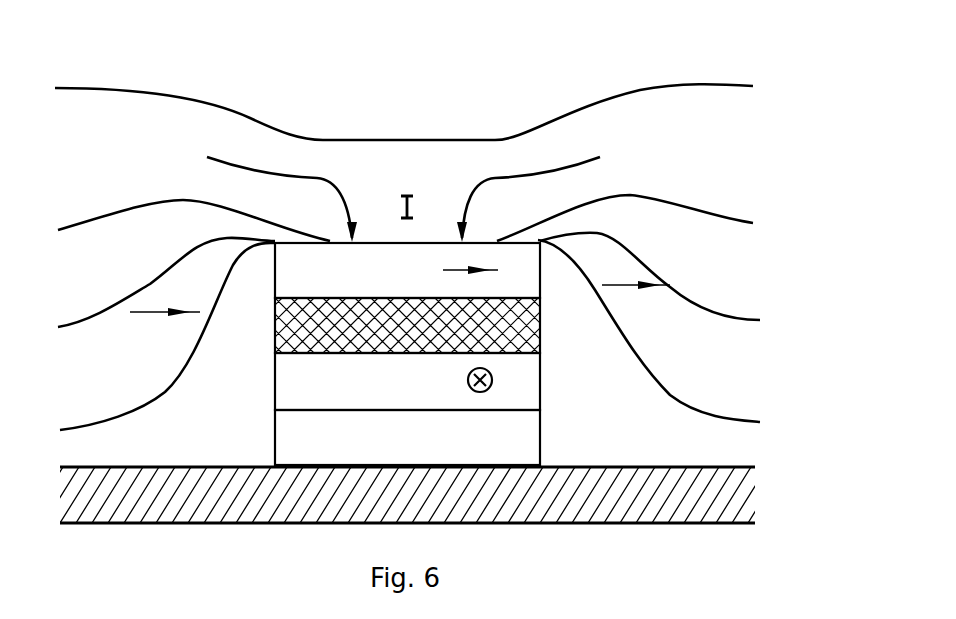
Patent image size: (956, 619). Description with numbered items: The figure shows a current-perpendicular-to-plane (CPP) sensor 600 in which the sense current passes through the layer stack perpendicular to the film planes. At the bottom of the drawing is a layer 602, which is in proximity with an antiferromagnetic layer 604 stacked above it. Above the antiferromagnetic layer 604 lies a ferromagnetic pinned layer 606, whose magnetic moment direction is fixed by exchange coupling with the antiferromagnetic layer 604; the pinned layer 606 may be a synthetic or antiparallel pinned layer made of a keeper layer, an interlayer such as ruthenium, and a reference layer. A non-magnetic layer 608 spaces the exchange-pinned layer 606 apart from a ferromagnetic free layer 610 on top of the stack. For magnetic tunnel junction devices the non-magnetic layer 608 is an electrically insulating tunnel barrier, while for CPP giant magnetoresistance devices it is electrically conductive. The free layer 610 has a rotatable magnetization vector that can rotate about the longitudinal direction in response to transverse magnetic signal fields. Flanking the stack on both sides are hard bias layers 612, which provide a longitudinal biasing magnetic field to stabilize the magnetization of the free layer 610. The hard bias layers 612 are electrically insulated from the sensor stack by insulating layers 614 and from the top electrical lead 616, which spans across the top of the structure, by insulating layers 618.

The current-perpendicular-to-plane (CPP) sensor 600 is at (812, 157).
The layer 602 is at (405, 495).
The antiferromagnetic layer 604 is at (407, 437).
The ferromagnetic pinned layer 606 is at (407, 381).
The non-magnetic layer 608 is at (406, 325).
The ferromagnetic free layer 610 is at (407, 270).
The hard bias layers 612 is at (409, 294).
The insulating layer 614 is at (410, 335).
The top electrical lead 616 is at (404, 163).
The insulating layer 618 is at (405, 240).